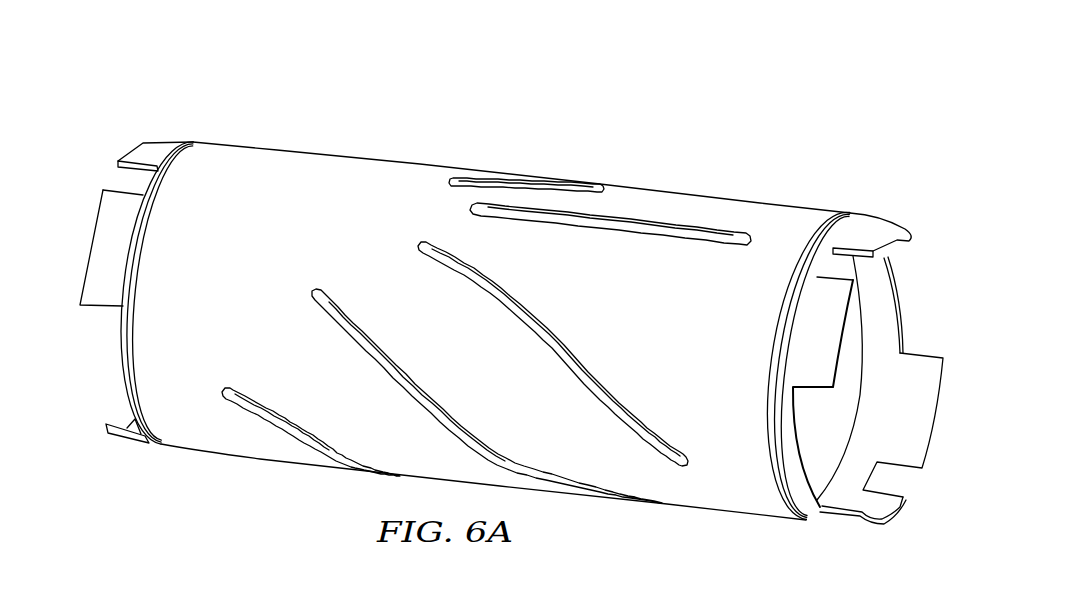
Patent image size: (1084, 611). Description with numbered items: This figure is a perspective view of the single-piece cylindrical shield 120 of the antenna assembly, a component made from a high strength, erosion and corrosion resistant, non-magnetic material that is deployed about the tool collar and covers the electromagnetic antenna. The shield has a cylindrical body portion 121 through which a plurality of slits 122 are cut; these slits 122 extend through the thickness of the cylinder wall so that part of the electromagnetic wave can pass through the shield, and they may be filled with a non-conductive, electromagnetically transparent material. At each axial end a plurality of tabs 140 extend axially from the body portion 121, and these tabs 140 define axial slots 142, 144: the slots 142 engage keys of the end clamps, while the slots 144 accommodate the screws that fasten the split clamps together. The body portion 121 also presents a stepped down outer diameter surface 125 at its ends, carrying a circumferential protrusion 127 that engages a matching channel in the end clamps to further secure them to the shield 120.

The cylindrical shield 120 is at (610, 100).
The cylindrical body portion 121 is at (319, 162).
The slits 122 is at (536, 313).
The stepped down outer diameter surface 125 is at (806, 418).
The circumferential protrusion 127 is at (784, 428).
The tabs 140 is at (100, 290).
The axial slots 142 is at (128, 178).
The axial slots 144 is at (104, 390).